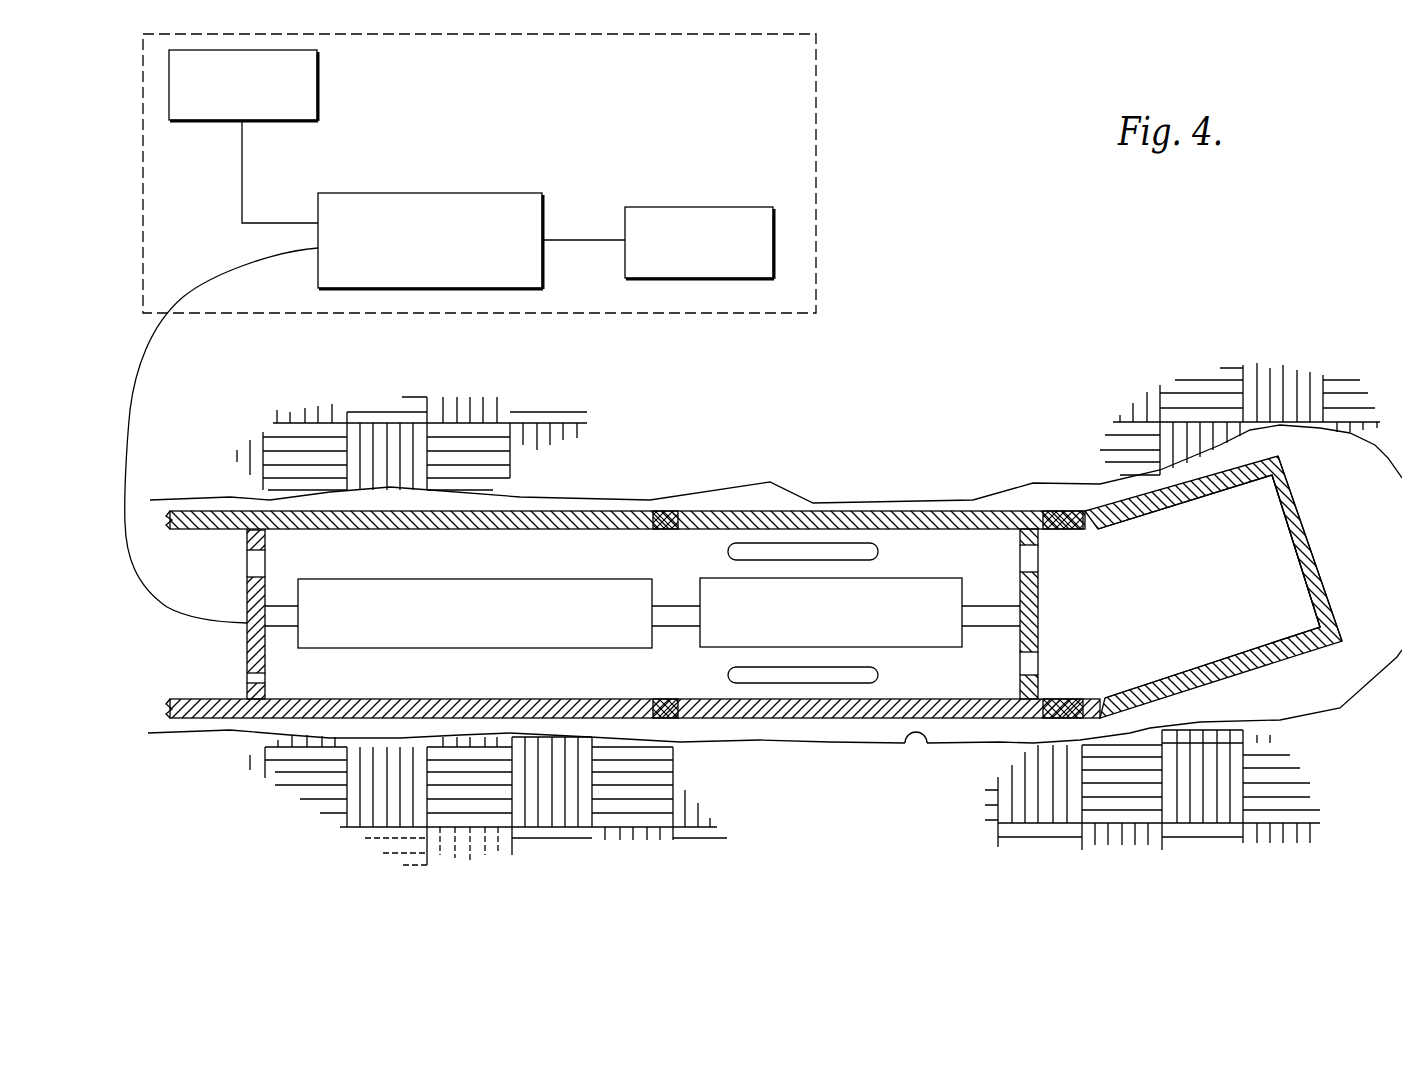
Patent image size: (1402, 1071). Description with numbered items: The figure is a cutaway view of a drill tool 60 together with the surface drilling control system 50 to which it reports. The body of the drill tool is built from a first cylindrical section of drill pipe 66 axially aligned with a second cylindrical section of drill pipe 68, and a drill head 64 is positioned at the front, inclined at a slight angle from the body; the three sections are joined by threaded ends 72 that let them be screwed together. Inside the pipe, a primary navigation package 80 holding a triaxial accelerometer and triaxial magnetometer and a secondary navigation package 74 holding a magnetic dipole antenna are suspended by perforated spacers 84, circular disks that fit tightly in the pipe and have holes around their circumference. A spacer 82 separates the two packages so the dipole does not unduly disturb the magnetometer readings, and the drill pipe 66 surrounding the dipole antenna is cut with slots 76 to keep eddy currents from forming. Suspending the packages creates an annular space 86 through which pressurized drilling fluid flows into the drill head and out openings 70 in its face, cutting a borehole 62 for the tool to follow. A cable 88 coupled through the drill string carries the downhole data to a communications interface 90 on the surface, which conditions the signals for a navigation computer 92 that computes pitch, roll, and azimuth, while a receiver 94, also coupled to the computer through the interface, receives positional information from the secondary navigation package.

The drilling control system 50 is at (816, 88).
The receiver 94 is at (317, 86).
The communications interface 90 is at (440, 193).
The navigation computer 92 is at (702, 207).
The cable 88 is at (147, 350).
The drill tool 60 is at (936, 450).
The borehole 62 is at (908, 743).
The drill head 64 is at (1238, 478).
The first cylindrical section of drill pipe 66 is at (830, 511).
The second cylindrical section of drill pipe 68 is at (472, 530).
The openings 70 is at (1300, 510).
The threaded ends 72 is at (660, 511).
The secondary navigation package 74 is at (920, 578).
The slots 76 is at (728, 551).
The primary navigation package 80 is at (535, 578).
The spacer 82 is at (668, 605).
The perforated spacers 84 is at (247, 640).
The annular space 86 is at (297, 688).